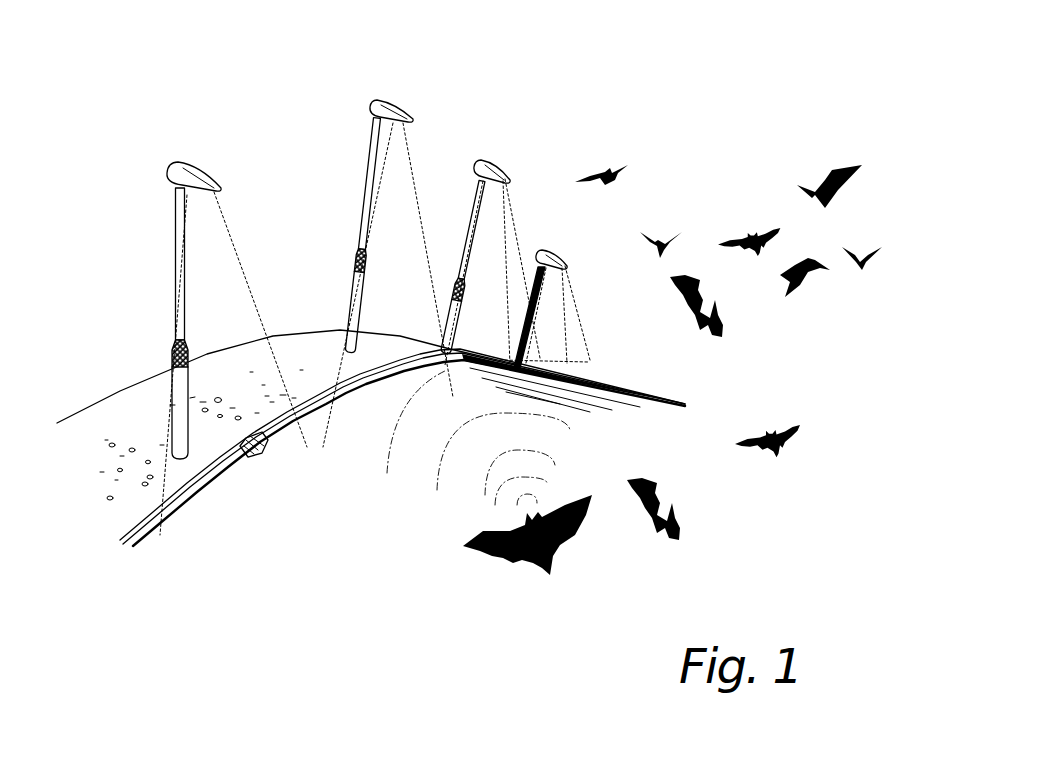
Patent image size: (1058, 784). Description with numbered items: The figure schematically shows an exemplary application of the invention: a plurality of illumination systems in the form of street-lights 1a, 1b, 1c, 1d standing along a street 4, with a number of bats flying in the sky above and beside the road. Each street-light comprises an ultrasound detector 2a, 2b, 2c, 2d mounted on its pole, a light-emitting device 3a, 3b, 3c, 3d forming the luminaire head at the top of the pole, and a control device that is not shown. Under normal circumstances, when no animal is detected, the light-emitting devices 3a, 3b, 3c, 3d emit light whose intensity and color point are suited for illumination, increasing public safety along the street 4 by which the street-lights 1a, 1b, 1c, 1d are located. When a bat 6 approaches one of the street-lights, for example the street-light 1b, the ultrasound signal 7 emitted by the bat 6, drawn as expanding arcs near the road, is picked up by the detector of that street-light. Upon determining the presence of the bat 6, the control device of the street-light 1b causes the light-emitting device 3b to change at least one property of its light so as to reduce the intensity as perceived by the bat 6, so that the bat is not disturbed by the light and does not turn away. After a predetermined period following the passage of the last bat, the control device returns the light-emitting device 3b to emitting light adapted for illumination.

The street-light 1a is at (178, 323).
The street-light 1b is at (349, 238).
The street-light 1c is at (459, 187).
The street-light 1d is at (559, 209).
The ultrasound detector 2a is at (177, 360).
The ultrasound detector 2b is at (352, 268).
The ultrasound detector 2c is at (457, 292).
The ultrasound detector 2d is at (512, 364).
The light-emitting device 3a is at (167, 216).
The light-emitting device 3b is at (390, 108).
The light-emitting device 3c is at (463, 205).
The light-emitting device 3d is at (555, 256).
The street 4 is at (222, 545).
The bat 6 is at (553, 550).
The ultrasound signal 7 is at (470, 487).